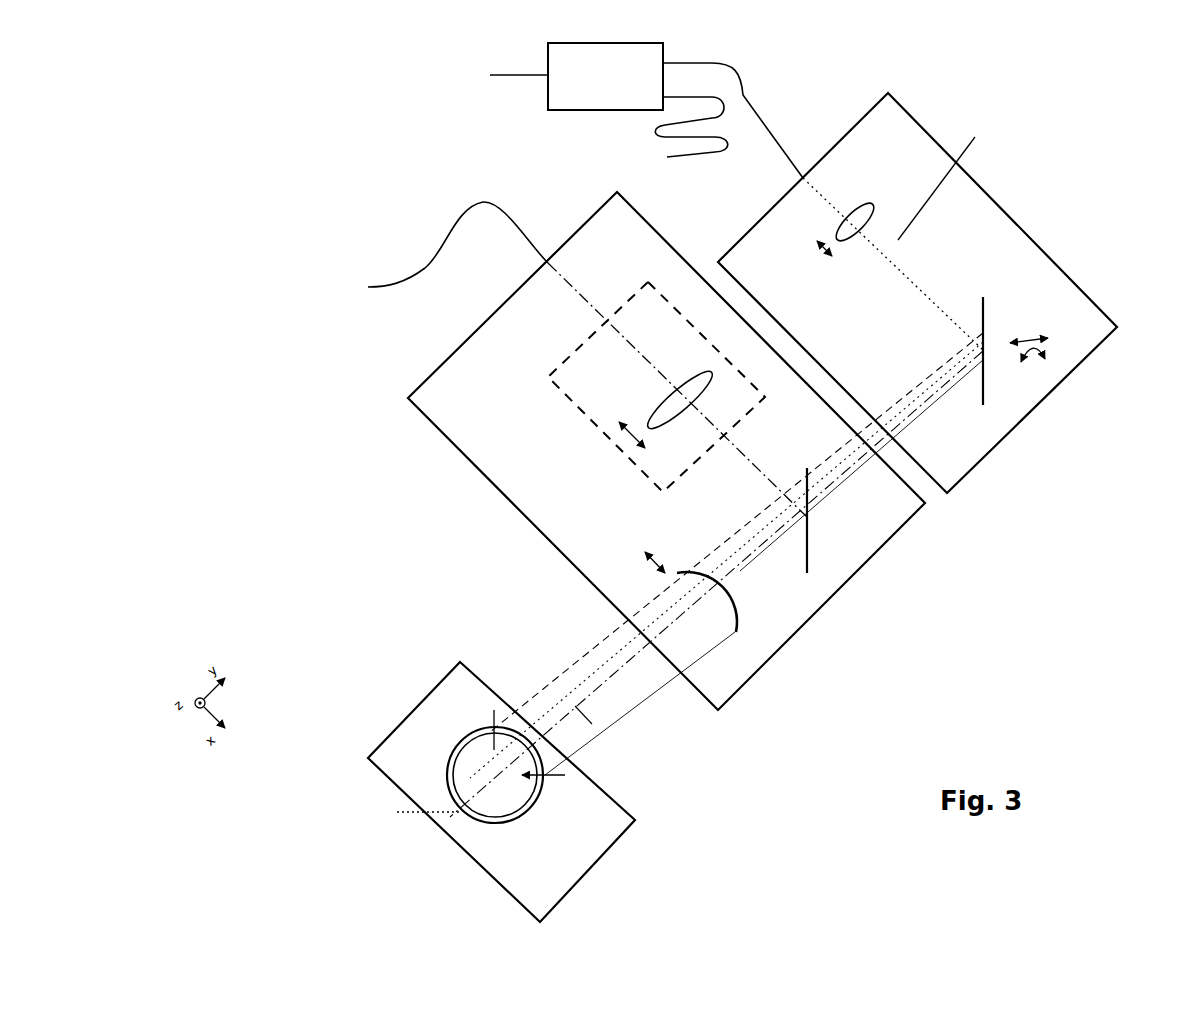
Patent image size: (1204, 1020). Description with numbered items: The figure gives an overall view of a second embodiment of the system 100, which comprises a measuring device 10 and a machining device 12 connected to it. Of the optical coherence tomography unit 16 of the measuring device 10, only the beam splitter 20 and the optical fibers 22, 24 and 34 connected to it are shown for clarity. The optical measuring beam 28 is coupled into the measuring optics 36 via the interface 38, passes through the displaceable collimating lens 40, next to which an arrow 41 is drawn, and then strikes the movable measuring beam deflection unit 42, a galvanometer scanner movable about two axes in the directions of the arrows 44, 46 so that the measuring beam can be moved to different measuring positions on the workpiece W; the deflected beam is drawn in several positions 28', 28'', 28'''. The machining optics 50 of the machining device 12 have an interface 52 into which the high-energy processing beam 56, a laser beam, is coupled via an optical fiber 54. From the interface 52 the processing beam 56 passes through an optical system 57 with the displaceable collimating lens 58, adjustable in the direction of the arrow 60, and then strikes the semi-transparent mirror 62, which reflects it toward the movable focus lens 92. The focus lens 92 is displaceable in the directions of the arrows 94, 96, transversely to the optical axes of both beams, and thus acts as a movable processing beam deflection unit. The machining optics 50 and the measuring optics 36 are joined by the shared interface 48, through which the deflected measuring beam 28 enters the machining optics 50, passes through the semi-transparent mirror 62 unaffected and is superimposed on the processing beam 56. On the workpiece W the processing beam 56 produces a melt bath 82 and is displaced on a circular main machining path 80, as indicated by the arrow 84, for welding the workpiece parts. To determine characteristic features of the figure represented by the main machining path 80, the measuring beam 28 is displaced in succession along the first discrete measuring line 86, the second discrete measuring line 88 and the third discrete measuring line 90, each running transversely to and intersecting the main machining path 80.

The system 100 is at (261, 101).
The measuring device 10 is at (1001, 48).
The machining device 12 is at (323, 500).
The optical coherence tomography unit 16 is at (436, 151).
The beam splitter 20 is at (607, 57).
The optical fiber 22 is at (733, 104).
The optical fiber 24 is at (691, 146).
The optical measuring beam 28 is at (964, 172).
The first partial beam 28' is at (733, 532).
The second partial beam 28'' is at (726, 560).
The third partial beam 28''' is at (640, 711).
The optical fiber 34 is at (474, 73).
The measuring optics 36 is at (917, 293).
The interface 38 is at (893, 221).
The displaceable collimating lens 40 is at (867, 191).
The lens displacement direction 41 is at (813, 279).
The movable measuring beam deflection unit 42 is at (1056, 312).
The arrow 44 is at (1089, 351).
The arrow 46 is at (1079, 381).
The shared interface 48 is at (979, 525).
The machining optics 50 is at (666, 451).
The interface 52 is at (503, 280).
The optical fiber 54 is at (450, 281).
The high-energy processing beam 56 is at (593, 310).
The optical system 57 is at (644, 387).
The displaceable collimating lens 58 is at (726, 403).
The arrow 60 is at (604, 454).
The semi-transparent mirror 62 is at (872, 544).
The main machining path 80 is at (464, 775).
The melt bath 82 is at (454, 869).
The arrow 84 is at (513, 859).
The first discrete measuring line 86 is at (465, 721).
The second discrete measuring line 88 is at (561, 797).
The third discrete measuring line 90 is at (415, 814).
The movable focus lens 92 is at (767, 633).
The arrow 94 is at (592, 580).
The arrow 96 is at (595, 613).
The workpiece W is at (490, 771).